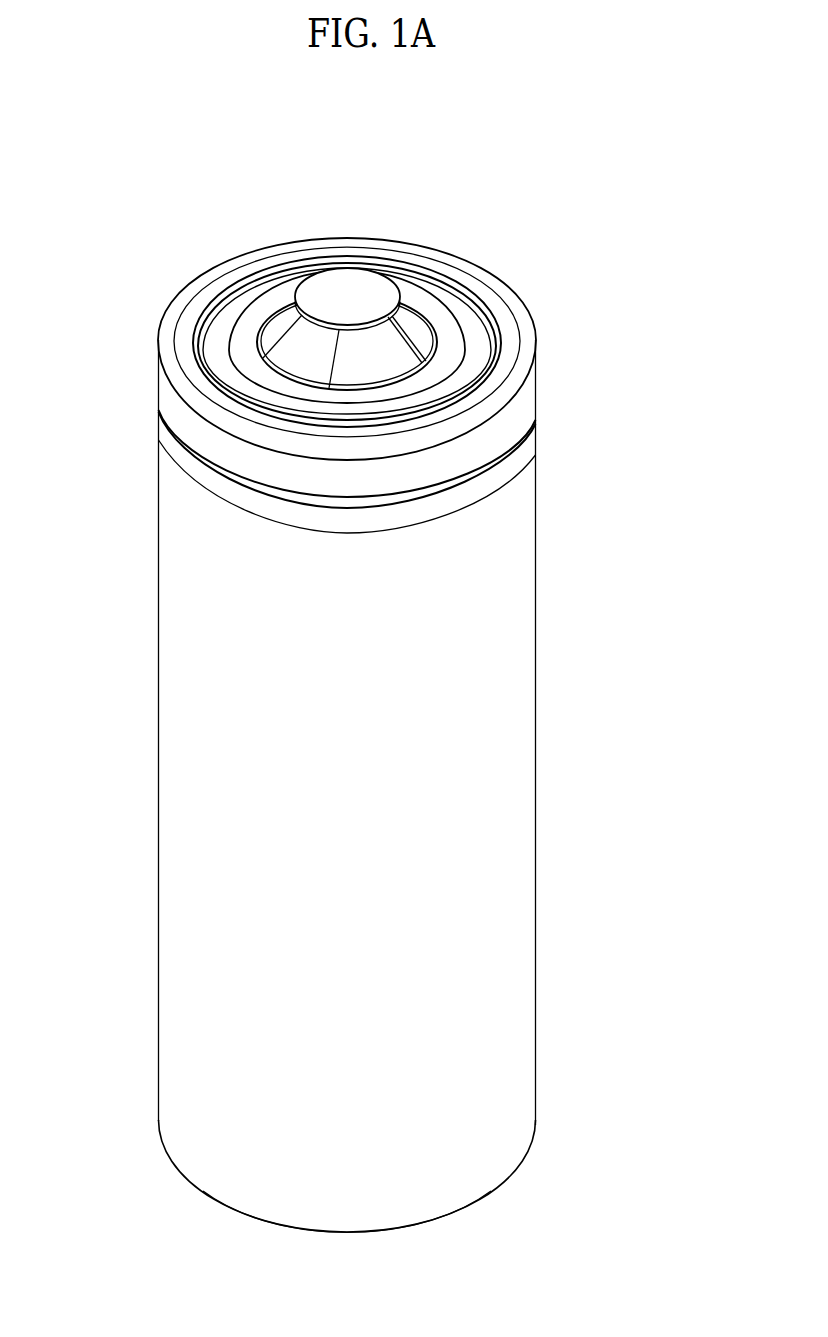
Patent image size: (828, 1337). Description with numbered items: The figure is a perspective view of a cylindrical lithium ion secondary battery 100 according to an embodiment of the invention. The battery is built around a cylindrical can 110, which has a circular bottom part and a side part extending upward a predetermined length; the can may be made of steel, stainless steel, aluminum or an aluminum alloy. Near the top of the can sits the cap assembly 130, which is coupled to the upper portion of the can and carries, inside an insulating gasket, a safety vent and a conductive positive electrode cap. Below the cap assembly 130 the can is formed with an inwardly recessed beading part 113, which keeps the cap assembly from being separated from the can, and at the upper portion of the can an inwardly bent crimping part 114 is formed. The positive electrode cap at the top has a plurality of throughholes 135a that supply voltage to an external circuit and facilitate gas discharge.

The cylindrical lithium ion secondary battery 100 is at (156, 199).
The cylindrical can 110 is at (545, 651).
The beading part 113 is at (528, 432).
The crimping part 114 is at (513, 327).
The cap assembly 130 is at (346, 292).
The throughholes 135a is at (383, 352).